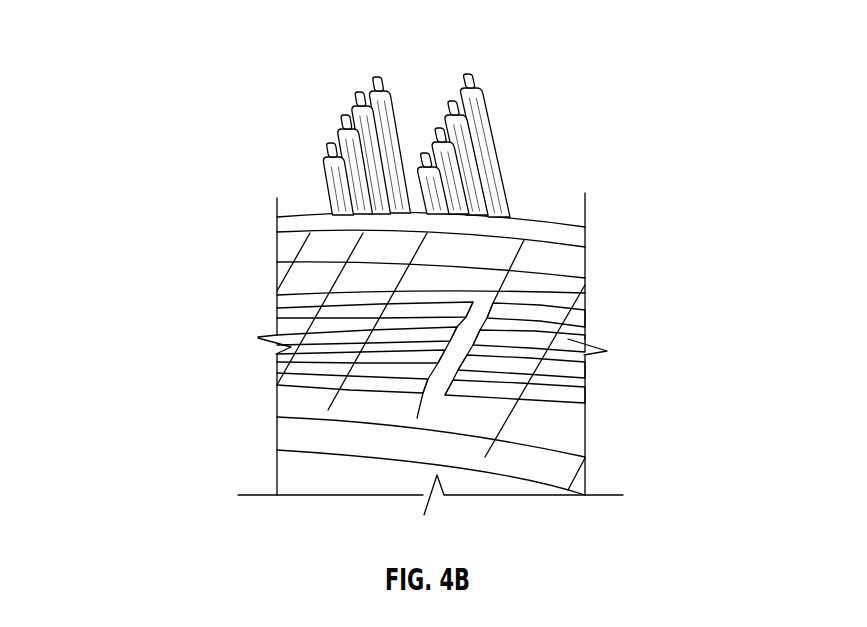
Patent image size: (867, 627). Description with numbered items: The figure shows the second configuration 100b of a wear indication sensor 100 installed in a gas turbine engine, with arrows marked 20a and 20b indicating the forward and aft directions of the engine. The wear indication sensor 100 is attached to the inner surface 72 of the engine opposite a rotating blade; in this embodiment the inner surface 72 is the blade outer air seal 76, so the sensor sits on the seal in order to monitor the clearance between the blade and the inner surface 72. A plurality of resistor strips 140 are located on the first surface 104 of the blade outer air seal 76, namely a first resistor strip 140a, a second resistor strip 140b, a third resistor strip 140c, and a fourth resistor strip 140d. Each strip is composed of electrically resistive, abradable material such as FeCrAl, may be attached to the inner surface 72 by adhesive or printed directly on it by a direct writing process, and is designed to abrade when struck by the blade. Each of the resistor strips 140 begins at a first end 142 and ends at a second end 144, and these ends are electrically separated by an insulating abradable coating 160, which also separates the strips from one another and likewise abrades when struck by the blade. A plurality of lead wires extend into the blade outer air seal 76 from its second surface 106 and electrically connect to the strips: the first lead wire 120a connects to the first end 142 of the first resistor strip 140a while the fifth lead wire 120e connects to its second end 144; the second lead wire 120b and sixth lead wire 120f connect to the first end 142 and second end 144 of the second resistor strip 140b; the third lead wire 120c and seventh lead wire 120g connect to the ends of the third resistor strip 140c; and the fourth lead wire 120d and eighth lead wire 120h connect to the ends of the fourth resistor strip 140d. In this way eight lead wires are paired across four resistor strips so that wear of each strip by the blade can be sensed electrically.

The wear indication sensor 100 is at (115, 58).
The second configuration 100b is at (215, 82).
The second surface 106 is at (305, 198).
The first lead wire 120a is at (433, 160).
The second lead wire 120b is at (447, 136).
The third lead wire 120c is at (452, 112).
The fourth lead wire 120d is at (476, 82).
The fifth lead wire 120e is at (328, 148).
The sixth lead wire 120f is at (342, 122).
The seventh lead wire 120g is at (358, 100).
The eighth lead wire 120h is at (375, 85).
The forward direction 20a is at (640, 148).
The aft direction 20b is at (188, 497).
The inner surface 72 is at (283, 229).
The blade outer air seal 76 is at (585, 237).
The first surface 104 is at (338, 435).
The plurality of resistor strips 140 is at (690, 356).
The first resistor strip 140a is at (553, 400).
The second resistor strip 140b is at (553, 375).
The third resistor strip 140c is at (553, 348).
The fourth resistor strip 140d is at (553, 320).
The first end 142 is at (458, 370).
The second end 144 is at (425, 393).
The insulating abradable coating 160 is at (552, 433).